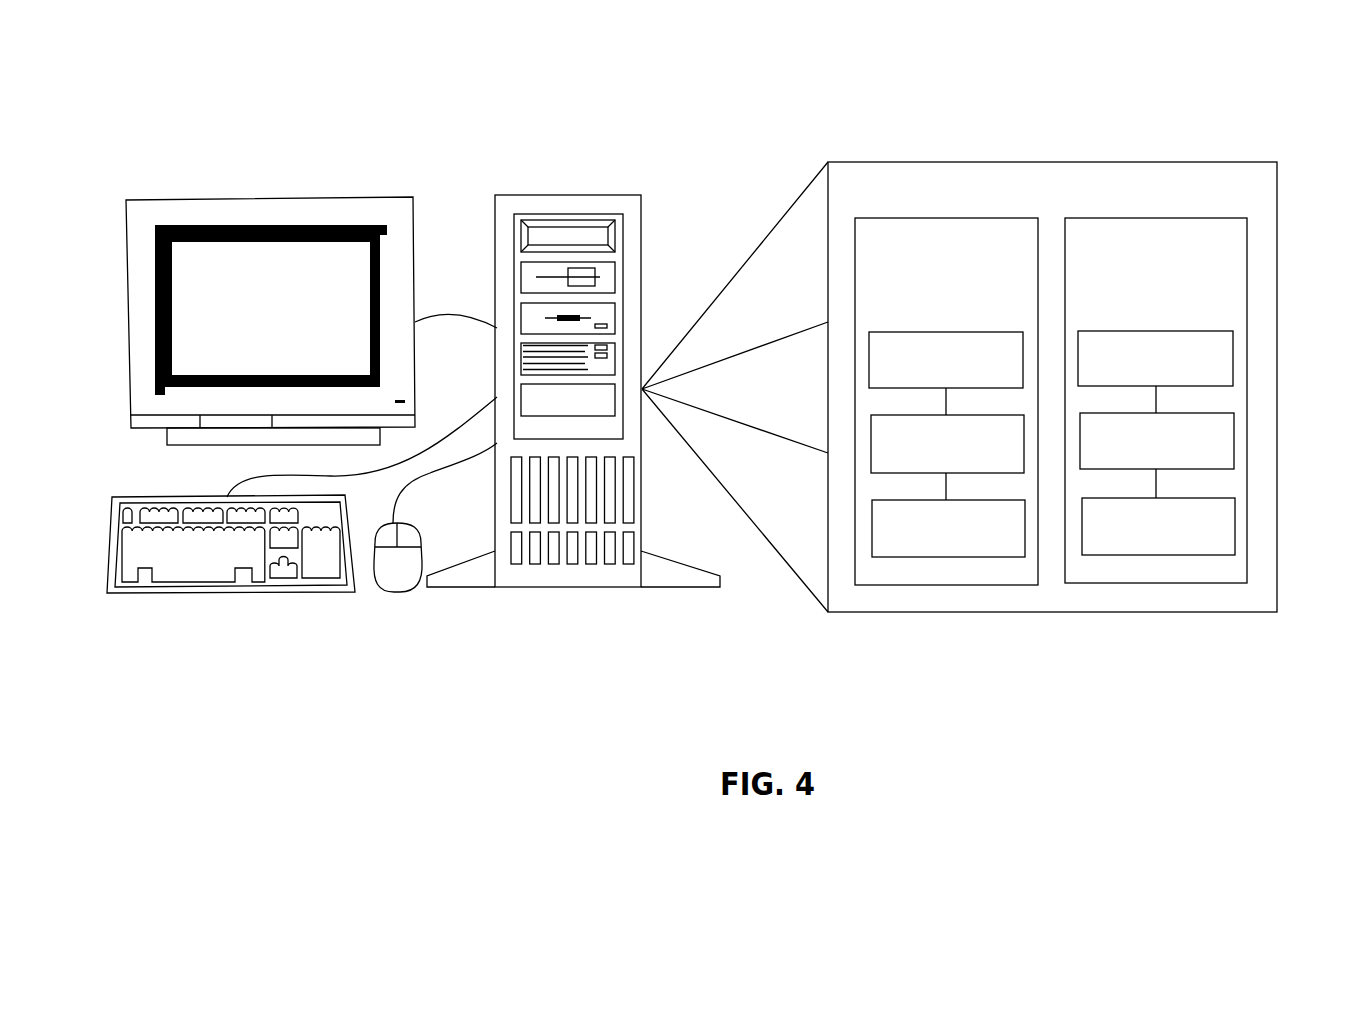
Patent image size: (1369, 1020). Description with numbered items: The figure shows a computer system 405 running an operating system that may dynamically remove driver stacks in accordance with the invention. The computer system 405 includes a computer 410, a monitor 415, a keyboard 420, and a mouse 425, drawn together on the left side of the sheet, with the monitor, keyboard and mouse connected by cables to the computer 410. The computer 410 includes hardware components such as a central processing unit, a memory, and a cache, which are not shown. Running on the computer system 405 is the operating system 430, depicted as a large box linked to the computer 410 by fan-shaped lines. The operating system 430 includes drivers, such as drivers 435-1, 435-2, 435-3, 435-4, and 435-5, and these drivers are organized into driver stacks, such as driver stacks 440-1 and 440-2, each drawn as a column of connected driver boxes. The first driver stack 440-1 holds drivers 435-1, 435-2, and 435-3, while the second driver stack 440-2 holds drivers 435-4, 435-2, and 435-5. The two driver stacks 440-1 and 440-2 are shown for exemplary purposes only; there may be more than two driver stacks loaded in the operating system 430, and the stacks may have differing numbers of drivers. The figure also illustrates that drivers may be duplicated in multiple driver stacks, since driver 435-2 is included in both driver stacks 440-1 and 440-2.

The computer system 405 is at (134, 93).
The computer 410 is at (538, 195).
The monitor 415 is at (173, 198).
The keyboard 420 is at (148, 595).
The mouse 425 is at (393, 595).
The operating system 430 is at (866, 162).
The driver 435-1 is at (868, 360).
The driver 435-2 is at (870, 443).
The driver 435-3 is at (871, 525).
The driver 435-4 is at (1233, 356).
The driver 435-5 is at (1235, 527).
The driver stack 440-1 is at (950, 585).
The driver stack 440-2 is at (1158, 583).